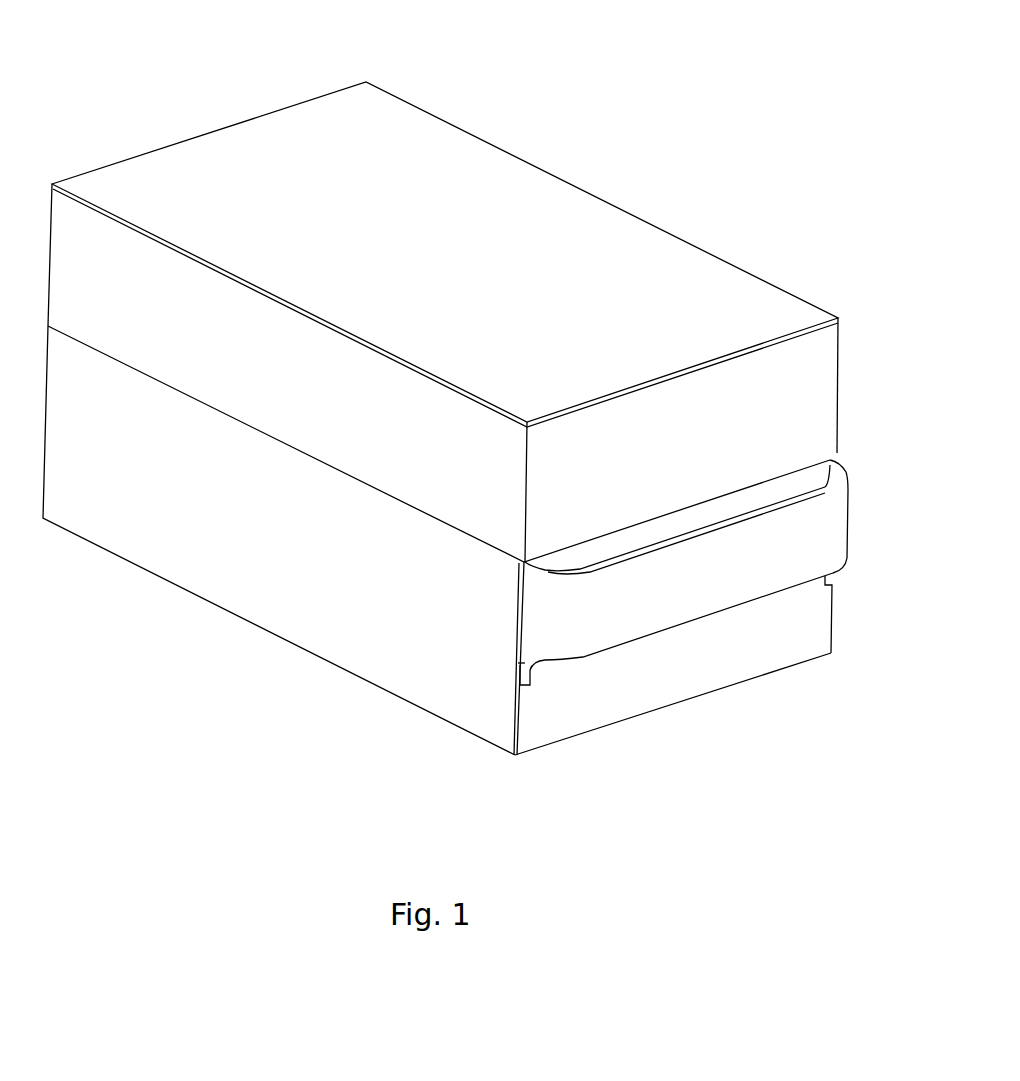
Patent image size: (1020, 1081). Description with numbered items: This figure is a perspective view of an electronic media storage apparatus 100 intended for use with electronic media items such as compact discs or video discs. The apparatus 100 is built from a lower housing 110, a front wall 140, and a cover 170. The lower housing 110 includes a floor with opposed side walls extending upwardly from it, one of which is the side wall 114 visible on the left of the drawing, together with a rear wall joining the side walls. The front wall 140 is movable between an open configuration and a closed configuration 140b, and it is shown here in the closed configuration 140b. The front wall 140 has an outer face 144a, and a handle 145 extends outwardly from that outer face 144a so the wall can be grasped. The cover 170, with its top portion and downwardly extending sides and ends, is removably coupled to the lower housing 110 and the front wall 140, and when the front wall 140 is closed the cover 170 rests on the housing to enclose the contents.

The electronic media storage apparatus 100 is at (445, 453).
The cover 170 is at (252, 162).
The lower housing 110 is at (440, 601).
The first side wall 114 is at (313, 602).
The front wall 140 is at (676, 726).
The closed configuration 140b is at (555, 777).
The outer face 144a is at (785, 647).
The handle 145 is at (698, 598).